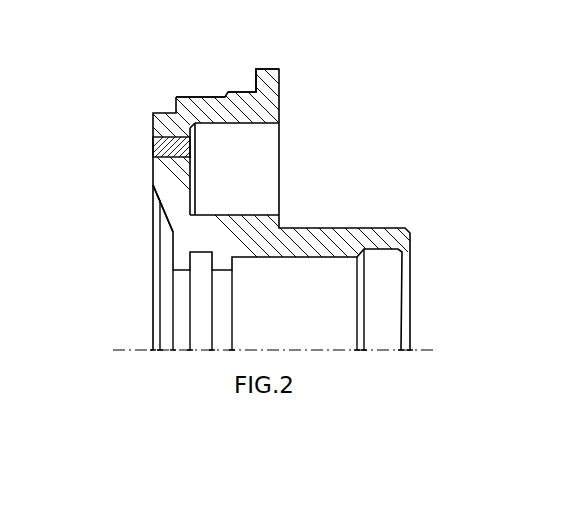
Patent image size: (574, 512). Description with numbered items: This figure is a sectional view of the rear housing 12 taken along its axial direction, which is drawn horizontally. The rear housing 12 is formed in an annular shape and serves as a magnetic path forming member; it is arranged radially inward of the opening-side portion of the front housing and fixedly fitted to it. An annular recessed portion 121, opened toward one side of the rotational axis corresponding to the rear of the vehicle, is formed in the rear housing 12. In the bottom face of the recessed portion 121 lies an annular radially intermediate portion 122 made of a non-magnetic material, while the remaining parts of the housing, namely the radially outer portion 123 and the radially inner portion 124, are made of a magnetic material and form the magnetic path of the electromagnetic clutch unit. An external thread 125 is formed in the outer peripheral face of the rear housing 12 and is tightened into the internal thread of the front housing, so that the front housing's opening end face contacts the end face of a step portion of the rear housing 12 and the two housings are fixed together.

The rear housing 12 is at (372, 113).
The annular recessed portion 121 is at (254, 124).
The annular radially intermediate portion 122 is at (152, 142).
The radially outer portion 123 is at (176, 98).
The radially inner portion 124 is at (175, 220).
The external thread 125 is at (247, 93).